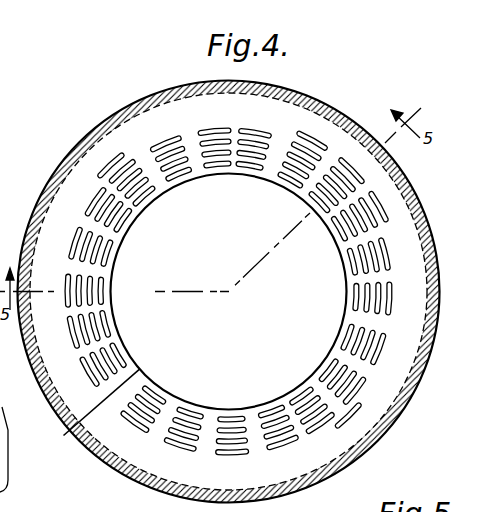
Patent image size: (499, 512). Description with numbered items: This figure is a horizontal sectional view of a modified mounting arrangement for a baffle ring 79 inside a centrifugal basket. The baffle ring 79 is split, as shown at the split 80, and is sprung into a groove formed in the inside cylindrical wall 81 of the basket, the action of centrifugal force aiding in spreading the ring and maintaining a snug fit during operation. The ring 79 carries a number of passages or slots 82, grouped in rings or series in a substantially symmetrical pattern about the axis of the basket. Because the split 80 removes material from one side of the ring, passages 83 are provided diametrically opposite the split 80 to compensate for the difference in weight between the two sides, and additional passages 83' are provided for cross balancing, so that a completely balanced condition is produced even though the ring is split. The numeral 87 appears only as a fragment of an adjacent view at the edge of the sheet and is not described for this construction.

In FIG. 4, the baffle ring 79 is at (392, 200).
In FIG. 4, the split 80 is at (99, 419).
In FIG. 4, the inside cylindrical wall 81 is at (427, 360).
In FIG. 4, the passages or slots 82 is at (262, 406).
In FIG. 4, the passages 83 is at (343, 156).
In FIG. 4, the additional passages 83' is at (245, 277).
In FIG. 5, the fragment of adjacent figure 87 is at (0, 397).